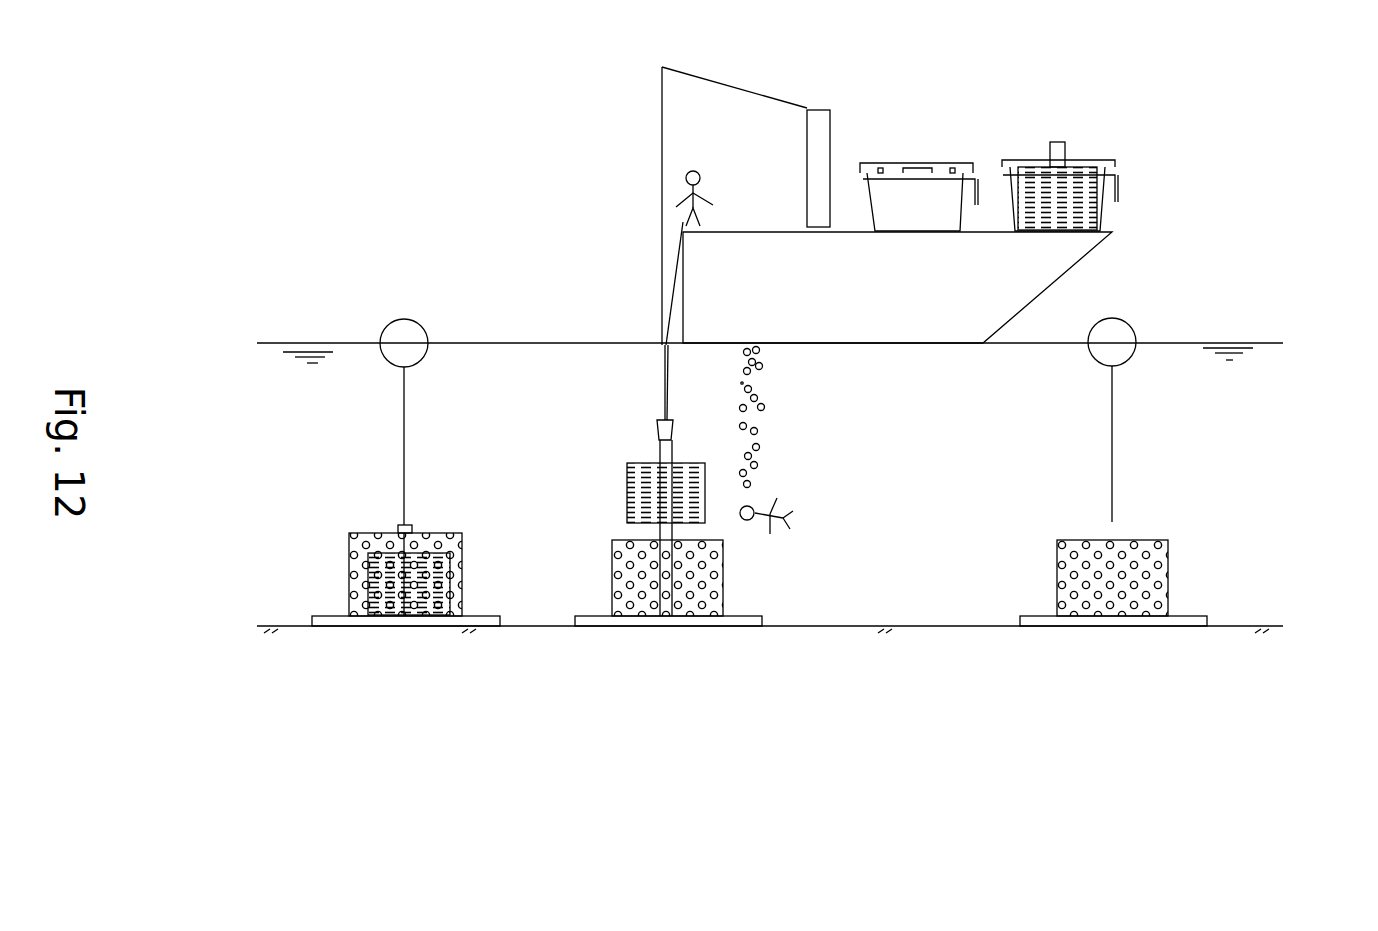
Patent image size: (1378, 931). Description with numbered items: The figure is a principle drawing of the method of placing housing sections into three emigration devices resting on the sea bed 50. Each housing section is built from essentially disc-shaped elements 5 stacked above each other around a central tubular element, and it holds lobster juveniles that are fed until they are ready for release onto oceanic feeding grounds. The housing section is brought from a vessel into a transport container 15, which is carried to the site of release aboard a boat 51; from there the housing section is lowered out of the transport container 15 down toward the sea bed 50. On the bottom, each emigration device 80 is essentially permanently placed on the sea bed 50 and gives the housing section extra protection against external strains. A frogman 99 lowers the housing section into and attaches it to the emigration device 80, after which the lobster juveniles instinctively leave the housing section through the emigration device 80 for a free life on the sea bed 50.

The disc-shaped element 5 is at (1115, 193).
The transport container 15 is at (952, 193).
The sea bed 50 is at (952, 627).
The boat 51 is at (1030, 271).
The emigration device 80 is at (334, 553).
The frogman 99 is at (777, 512).